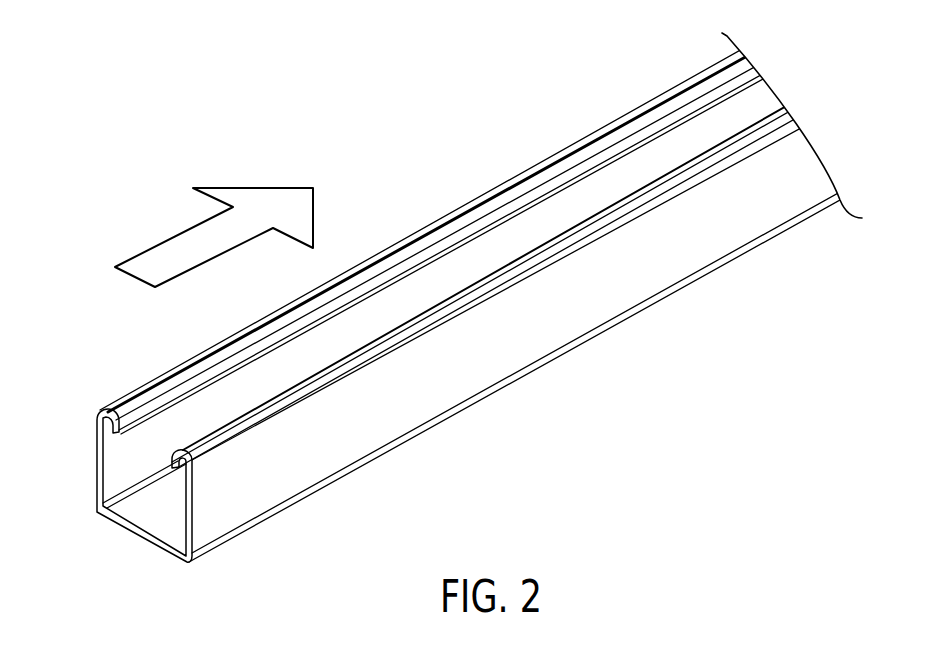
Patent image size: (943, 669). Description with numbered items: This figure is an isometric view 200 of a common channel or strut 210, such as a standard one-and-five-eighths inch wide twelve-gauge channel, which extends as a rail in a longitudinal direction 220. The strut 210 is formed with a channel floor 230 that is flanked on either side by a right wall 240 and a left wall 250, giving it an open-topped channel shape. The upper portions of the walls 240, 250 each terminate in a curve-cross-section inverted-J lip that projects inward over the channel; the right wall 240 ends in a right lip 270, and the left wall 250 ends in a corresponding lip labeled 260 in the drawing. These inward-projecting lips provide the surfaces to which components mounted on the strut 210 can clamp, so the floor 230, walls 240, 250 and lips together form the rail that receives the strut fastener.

The isometric view 200 is at (281, 100).
The strut 210 is at (674, 290).
The longitudinal direction 220 is at (275, 224).
The channel floor 230 is at (147, 526).
The right wall 240 is at (344, 466).
The left wall 250 is at (96, 466).
The inturned lip 260 is at (616, 195).
The right lip 270 is at (596, 132).